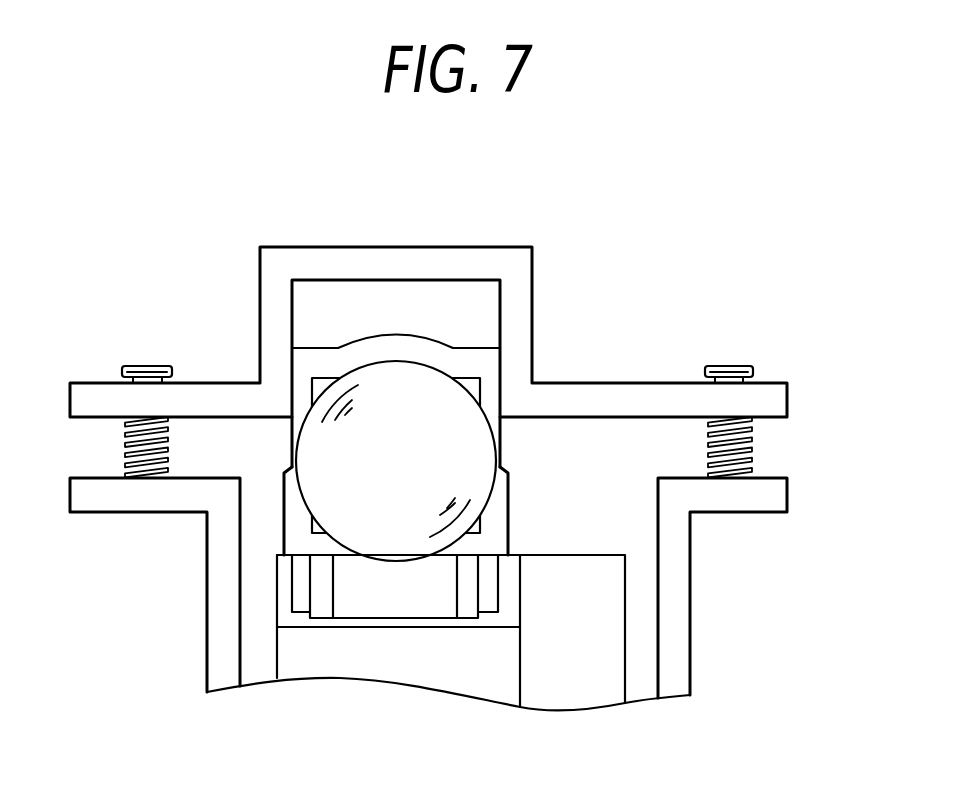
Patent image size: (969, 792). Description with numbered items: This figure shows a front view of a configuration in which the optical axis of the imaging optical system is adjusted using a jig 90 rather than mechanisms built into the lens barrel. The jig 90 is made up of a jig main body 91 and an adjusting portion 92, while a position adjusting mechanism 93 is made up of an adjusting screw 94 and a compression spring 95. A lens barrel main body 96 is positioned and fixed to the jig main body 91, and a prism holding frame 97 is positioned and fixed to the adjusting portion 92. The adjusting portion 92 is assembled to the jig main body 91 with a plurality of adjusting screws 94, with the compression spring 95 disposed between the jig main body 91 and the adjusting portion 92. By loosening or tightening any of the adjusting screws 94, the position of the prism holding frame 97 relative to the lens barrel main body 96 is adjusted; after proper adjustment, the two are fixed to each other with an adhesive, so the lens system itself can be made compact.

The jig 90 is at (705, 272).
The jig main body 91 is at (685, 495).
The adjusting portion 92 is at (517, 337).
The position adjusting mechanism 93 is at (790, 315).
The adjusting screw 94 is at (135, 366).
The compression spring 95 is at (127, 442).
The lens barrel main body 96 is at (542, 577).
The prism holding frame 97 is at (500, 492).